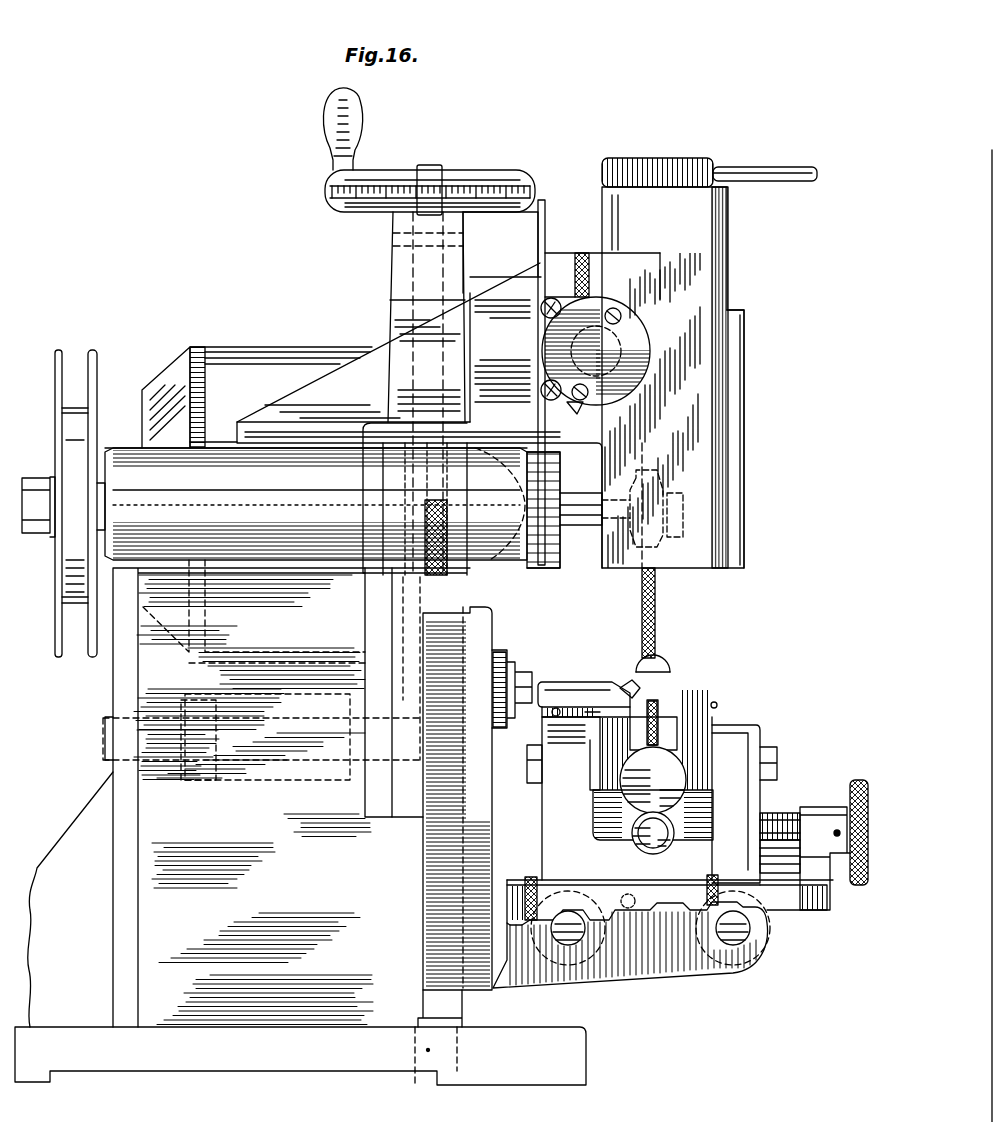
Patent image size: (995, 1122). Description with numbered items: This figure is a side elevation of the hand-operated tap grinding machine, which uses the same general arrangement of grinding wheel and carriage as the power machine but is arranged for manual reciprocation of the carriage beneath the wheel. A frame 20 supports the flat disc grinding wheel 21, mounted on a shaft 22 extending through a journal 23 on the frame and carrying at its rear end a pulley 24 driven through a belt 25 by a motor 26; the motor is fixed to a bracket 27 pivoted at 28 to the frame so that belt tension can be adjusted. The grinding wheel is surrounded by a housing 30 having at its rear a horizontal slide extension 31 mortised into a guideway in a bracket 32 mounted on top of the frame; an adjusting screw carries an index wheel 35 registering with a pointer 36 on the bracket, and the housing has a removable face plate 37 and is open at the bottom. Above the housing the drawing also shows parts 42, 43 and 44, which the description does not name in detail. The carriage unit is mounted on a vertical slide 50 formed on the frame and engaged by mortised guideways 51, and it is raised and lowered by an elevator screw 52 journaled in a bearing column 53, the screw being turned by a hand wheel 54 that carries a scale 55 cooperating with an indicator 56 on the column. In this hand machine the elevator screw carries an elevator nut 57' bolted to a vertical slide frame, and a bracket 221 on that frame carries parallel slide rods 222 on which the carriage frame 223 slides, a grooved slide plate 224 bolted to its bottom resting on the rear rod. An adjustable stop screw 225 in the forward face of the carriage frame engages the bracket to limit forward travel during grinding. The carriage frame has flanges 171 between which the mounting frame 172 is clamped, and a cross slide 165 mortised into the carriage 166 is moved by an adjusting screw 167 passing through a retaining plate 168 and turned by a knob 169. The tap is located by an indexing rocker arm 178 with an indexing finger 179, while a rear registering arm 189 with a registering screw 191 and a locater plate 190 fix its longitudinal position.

The frame 20 is at (398, 928).
The flat disc grinding wheel 21 is at (660, 616).
The shaft 22 is at (587, 520).
The journal 23 is at (137, 462).
The pulley 24 is at (99, 370).
The belt 25 is at (66, 372).
The motor 26 is at (232, 358).
The bracket 27 is at (194, 771).
The pivot 28 is at (259, 753).
The housing 30 is at (722, 286).
The horizontal slide extension 31 is at (590, 406).
The bracket 32 is at (498, 292).
The index wheel 35 is at (630, 322).
The pointer 36 is at (571, 282).
The removable face plate 37 is at (747, 334).
The upper block 42 is at (724, 226).
The knurled knob 43 is at (682, 165).
The rod 44 is at (785, 172).
The vertical slide 50 is at (455, 1003).
The mortised guideways 51 is at (437, 840).
The elevator screw 52 is at (395, 590).
The bearing column 53 is at (403, 294).
The hand wheel 54 is at (515, 178).
The scale 55 is at (328, 192).
The indicator 56 is at (544, 214).
The elevator nut 57' is at (516, 665).
The transverse slide 165 is at (777, 865).
The carriage 166 is at (670, 882).
The adjusting screw 167 is at (772, 825).
The retaining plate 168 is at (808, 807).
The knob 169 is at (858, 778).
The flanges 171 is at (780, 737).
The mounting frame 172 is at (610, 785).
The indexing rocker arm 178 is at (562, 682).
The indexing finger 179 is at (628, 680).
The rear registering arm 189 is at (667, 733).
The locater plate 190 is at (668, 668).
The registering screw 191 is at (653, 780).
The bracket 221 is at (640, 975).
The slide rods 222 is at (565, 950).
The carriage frame 223 is at (780, 900).
The grooved slide plate 224 is at (525, 926).
The adjustable stop screw 225 is at (650, 927).